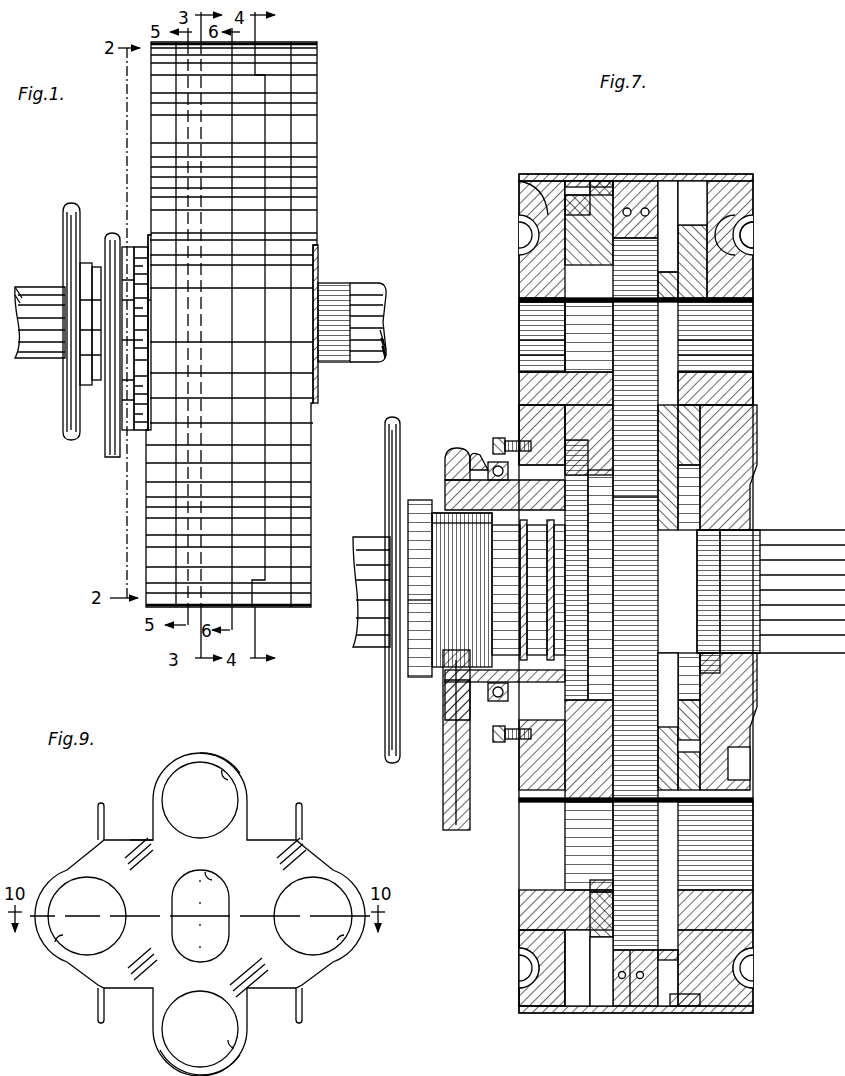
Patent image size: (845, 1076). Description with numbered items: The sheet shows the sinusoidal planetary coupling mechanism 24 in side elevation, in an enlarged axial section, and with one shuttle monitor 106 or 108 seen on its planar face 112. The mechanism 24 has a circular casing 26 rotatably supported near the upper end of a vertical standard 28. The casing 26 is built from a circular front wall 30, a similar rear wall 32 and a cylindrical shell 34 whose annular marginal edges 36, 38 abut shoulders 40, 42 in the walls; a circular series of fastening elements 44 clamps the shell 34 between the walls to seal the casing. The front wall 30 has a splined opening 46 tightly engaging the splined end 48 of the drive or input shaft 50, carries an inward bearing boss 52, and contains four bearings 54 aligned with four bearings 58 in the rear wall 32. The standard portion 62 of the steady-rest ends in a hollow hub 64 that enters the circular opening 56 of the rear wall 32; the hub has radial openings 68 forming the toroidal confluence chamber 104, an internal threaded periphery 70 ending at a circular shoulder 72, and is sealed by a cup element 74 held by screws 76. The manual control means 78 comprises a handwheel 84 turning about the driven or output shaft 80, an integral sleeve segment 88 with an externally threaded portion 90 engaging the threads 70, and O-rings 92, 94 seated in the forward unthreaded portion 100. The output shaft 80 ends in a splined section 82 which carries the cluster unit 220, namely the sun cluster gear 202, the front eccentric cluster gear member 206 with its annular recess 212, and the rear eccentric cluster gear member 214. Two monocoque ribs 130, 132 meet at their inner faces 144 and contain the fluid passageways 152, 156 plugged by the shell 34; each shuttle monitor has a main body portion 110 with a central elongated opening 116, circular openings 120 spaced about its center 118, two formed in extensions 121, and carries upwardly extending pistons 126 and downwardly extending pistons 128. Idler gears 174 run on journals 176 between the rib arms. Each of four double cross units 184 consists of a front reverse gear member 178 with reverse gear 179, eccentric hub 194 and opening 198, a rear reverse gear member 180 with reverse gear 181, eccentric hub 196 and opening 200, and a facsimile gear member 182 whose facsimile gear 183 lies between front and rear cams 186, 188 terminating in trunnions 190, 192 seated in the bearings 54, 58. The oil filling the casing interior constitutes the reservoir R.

In FIG. 1, the sinusoidal planetary coupling mechanism 24 is at (338, 85).
In FIG. 7, the sinusoidal planetary coupling mechanism 24 is at (718, 112).
In FIG. 1, the circular casing 26 is at (294, 42).
In FIG. 7, the circular casing 26 is at (656, 174).
In FIG. 1, the vertical standard 28 is at (100, 458).
In FIG. 7, the vertical standard 28 is at (440, 797).
In FIG. 1, the front wall 30 is at (307, 116).
In FIG. 7, the front wall 30 is at (753, 184).
In FIG. 1, the rear wall 32 is at (158, 117).
In FIG. 7, the rear wall 32 is at (519, 176).
In FIG. 1, the cylindrical shell 34 is at (273, 155).
In FIG. 7, the cylindrical shell 34 is at (700, 174).
In FIG. 1, the annular marginal edge 36 is at (292, 199).
In FIG. 7, the annular marginal edge 36 is at (712, 181).
In FIG. 1, the annular marginal edge 38 is at (176, 153).
In FIG. 7, the annular marginal edge 38 is at (568, 181).
In FIG. 1, the shoulder 40 is at (285, 222).
In FIG. 7, the shoulder 40 is at (740, 195).
In FIG. 1, the shoulder 42 is at (178, 177).
In FIG. 7, the shoulder 42 is at (540, 182).
In FIG. 7, the fastening elements 44 is at (752, 246).
In FIG. 7, the splined opening 46 is at (720, 660).
In FIG. 1, the splined end 48 is at (336, 283).
In FIG. 7, the splined end 48 is at (768, 540).
In FIG. 1, the drive or input shaft 50 is at (375, 317).
In FIG. 7, the bearing boss 52 is at (715, 680).
In FIG. 7, the bearings 54 is at (753, 282).
In FIG. 7, the circular opening 56 is at (494, 468).
In FIG. 7, the bearings 58 is at (540, 320).
In FIG. 1, the standard portion 62 is at (108, 440).
In FIG. 7, the standard portion 62 is at (455, 832).
In FIG. 1, the hollow hub 64 is at (135, 338).
In FIG. 7, the hollow hub 64 is at (480, 682).
In FIG. 7, the radial openings 68 is at (622, 594).
In FIG. 7, the threaded internal periphery 70 is at (450, 500).
In FIG. 7, the circular shoulder 72 is at (450, 470).
In FIG. 1, the cup element 74 is at (140, 318).
In FIG. 7, the cup element 74 is at (475, 458).
In FIG. 1, the screws 76 is at (134, 248).
In FIG. 7, the screws 76 is at (498, 442).
In FIG. 1, the manual control means 78 is at (62, 400).
In FIG. 7, the manual control means 78 is at (384, 735).
In FIG. 1, the driven or output shaft 80 is at (30, 354).
In FIG. 7, the driven or output shaft 80 is at (362, 645).
In FIG. 7, the splined section 82 is at (756, 486).
In FIG. 1, the handwheel 84 is at (68, 208).
In FIG. 7, the handwheel 84 is at (386, 452).
In FIG. 7, the sleeve segment 88 is at (430, 580).
In FIG. 1, the externally threaded portion 90 is at (96, 262).
In FIG. 7, the externally threaded portion 90 is at (432, 610).
In FIG. 7, the O-ring 92 is at (509, 590).
In FIG. 7, the O-ring 94 is at (548, 592).
In FIG. 7, the forward unthreaded portion 100 is at (470, 565).
In FIG. 7, the confluence chamber 104 is at (600, 720).
In FIG. 9, the shuttle monitor 106 is at (175, 745).
In FIG. 7, the shuttle monitor 106 is at (660, 1006).
In FIG. 7, the shuttle monitor 108 is at (545, 935).
In FIG. 9, the main body portion 110 is at (143, 840).
In FIG. 7, the main body portion 110 is at (575, 425).
In FIG. 9, the planar face 112 is at (262, 852).
In FIG. 9, the elongated opening 116 is at (222, 890).
In FIG. 7, the elongated opening 116 is at (535, 410).
In FIG. 9, the center 118 is at (198, 918).
In FIG. 9, the circular openings 120 is at (240, 774).
In FIG. 7, the circular openings 120 is at (595, 188).
In FIG. 9, the extensions 121 is at (225, 758).
In FIG. 7, the extensions 121 is at (600, 181).
In FIG. 9, the upwardly extending pistons 126 is at (96, 813).
In FIG. 9, the downwardly extending pistons 128 is at (96, 1002).
In FIG. 7, the monocoque rib 130 is at (665, 200).
In FIG. 7, the monocoque rib 132 is at (570, 1006).
In FIG. 7, the inner faces 144 is at (625, 1006).
In FIG. 7, the fluid passageway 152 is at (645, 208).
In FIG. 7, the fluid passageway 156 is at (580, 975).
In FIG. 7, the idler gear 174 is at (700, 435).
In FIG. 7, the journals 176 is at (715, 968).
In FIG. 7, the front reverse gear member 178 is at (705, 450).
In FIG. 7, the reverse gear 179 is at (743, 220).
In FIG. 7, the rear reverse gear member 180 is at (565, 208).
In FIG. 7, the reverse gear 181 is at (565, 190).
In FIG. 7, the facsimile gear member 182 is at (565, 264).
In FIG. 7, the facsimile gear 183 is at (613, 322).
In FIG. 7, the double cross unit 184 is at (512, 303).
In FIG. 7, the front cam portion 186 is at (720, 360).
In FIG. 7, the rear cam portion 188 is at (560, 330).
In FIG. 7, the front trunnion 190 is at (730, 350).
In FIG. 7, the rear trunnion 192 is at (535, 352).
In FIG. 7, the eccentric hub 194 is at (705, 428).
In FIG. 7, the eccentric hub 196 is at (565, 262).
In FIG. 7, the circular opening 198 is at (753, 388).
In FIG. 7, the circular opening 200 is at (565, 372).
In FIG. 7, the sun cluster gear 202 is at (755, 470).
In FIG. 7, the front eccentric cluster gear member 206 is at (690, 746).
In FIG. 7, the annular recess 212 is at (690, 700).
In FIG. 7, the rear eccentric cluster gear member 214 is at (590, 470).
In FIG. 7, the cluster unit 220 is at (632, 495).
In FIG. 7, the reservoir R is at (530, 990).